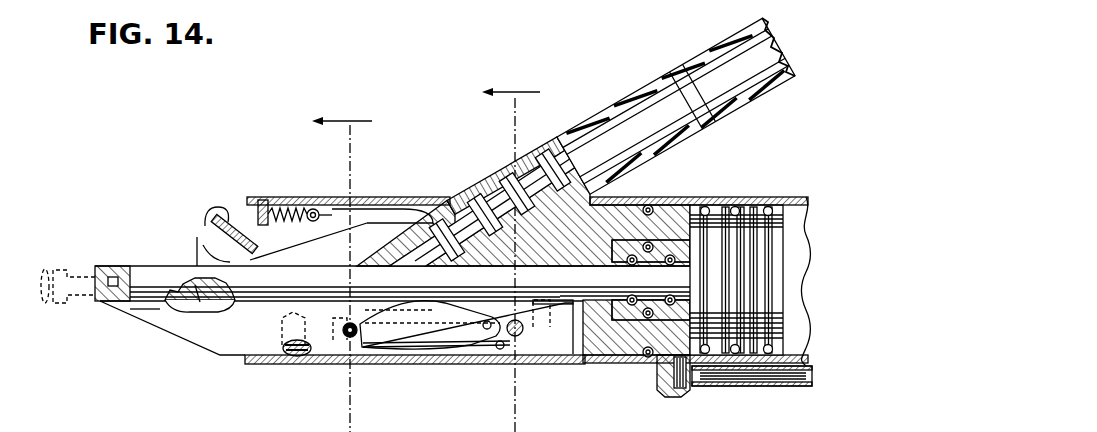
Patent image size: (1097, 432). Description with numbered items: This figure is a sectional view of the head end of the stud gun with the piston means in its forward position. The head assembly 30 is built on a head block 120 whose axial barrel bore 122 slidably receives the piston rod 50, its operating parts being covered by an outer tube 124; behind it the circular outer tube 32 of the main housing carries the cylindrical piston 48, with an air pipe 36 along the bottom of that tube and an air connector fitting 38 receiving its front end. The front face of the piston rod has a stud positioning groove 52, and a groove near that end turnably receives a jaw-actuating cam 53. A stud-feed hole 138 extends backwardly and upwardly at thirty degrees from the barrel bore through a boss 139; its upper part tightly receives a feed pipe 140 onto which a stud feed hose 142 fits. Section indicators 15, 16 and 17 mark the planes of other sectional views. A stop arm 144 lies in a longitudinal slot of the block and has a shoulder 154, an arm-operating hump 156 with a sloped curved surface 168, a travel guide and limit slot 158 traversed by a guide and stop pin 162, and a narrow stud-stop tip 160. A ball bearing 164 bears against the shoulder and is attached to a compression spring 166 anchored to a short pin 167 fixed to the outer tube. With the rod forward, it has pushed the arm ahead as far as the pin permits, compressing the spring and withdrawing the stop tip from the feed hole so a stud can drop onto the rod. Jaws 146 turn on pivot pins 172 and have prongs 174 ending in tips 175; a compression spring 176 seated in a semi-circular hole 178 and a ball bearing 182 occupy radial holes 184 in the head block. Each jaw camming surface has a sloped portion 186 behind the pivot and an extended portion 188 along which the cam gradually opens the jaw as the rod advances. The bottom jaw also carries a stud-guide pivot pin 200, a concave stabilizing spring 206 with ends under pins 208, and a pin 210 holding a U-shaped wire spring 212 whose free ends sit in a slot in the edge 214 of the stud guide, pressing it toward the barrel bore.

The head assembly 30 is at (272, 117).
The section line 16- 16 is at (356, 269).
The section line 17- 17 is at (523, 255).
The section line 15- 15 is at (394, 427).
The circular outer tube 32 is at (774, 204).
The air pipe 36 is at (790, 383).
The air connector fitting 38 is at (686, 392).
The cylindrical piston 48 is at (718, 204).
The piston rod 50 is at (640, 290).
The stud positioning groove 52 is at (110, 268).
The jaw-actuating cam 53 is at (200, 281).
The head block 120 is at (244, 204).
The barrel bore 122 is at (617, 286).
The outer tube 124 is at (394, 204).
The stud-feed hole 138 is at (473, 205).
The boss 139 is at (502, 178).
The feed pipe 140 is at (560, 136).
The stud feed hose 142 is at (672, 79).
The stop arm 144 is at (203, 235).
The jaws 146 is at (221, 334).
The shoulder 154 is at (325, 206).
The arm-operating hump portion 156 is at (197, 247).
The travel guide and limit slot 158 is at (236, 213).
The stud-stop tip 160 is at (433, 224).
The guide and stop pin 162 is at (263, 200).
The ball bearing 164 is at (322, 200).
The compression spring 166 is at (300, 207).
The short pin 167 is at (309, 210).
The sloped curved surface 168 is at (303, 257).
The pivot pin 172 is at (512, 352).
The prong 174 is at (168, 314).
The tips 175 is at (136, 311).
The compression spring 176 is at (285, 357).
The semi-circular hole 178 is at (296, 362).
The ball bearing 182 is at (330, 359).
The radial holes 184 is at (247, 358).
The sloped portion 186 is at (636, 360).
The extended portion 188 is at (222, 307).
The stud-guide pivot pin 200 is at (468, 352).
The stabilizing spring 206 is at (418, 353).
The pins 208 is at (401, 362).
The pin 210 is at (514, 338).
The U-shaped wire spring 212 is at (510, 352).
The edge of stud guide 214 is at (452, 358).